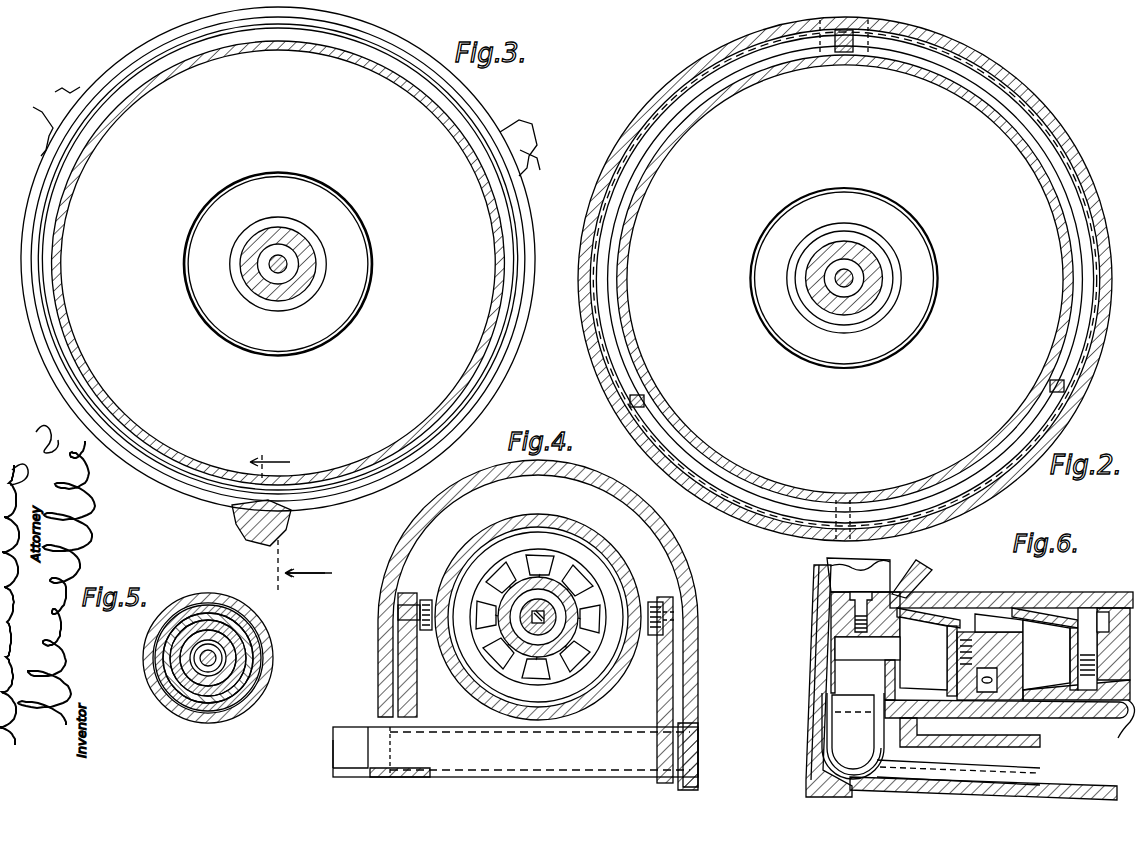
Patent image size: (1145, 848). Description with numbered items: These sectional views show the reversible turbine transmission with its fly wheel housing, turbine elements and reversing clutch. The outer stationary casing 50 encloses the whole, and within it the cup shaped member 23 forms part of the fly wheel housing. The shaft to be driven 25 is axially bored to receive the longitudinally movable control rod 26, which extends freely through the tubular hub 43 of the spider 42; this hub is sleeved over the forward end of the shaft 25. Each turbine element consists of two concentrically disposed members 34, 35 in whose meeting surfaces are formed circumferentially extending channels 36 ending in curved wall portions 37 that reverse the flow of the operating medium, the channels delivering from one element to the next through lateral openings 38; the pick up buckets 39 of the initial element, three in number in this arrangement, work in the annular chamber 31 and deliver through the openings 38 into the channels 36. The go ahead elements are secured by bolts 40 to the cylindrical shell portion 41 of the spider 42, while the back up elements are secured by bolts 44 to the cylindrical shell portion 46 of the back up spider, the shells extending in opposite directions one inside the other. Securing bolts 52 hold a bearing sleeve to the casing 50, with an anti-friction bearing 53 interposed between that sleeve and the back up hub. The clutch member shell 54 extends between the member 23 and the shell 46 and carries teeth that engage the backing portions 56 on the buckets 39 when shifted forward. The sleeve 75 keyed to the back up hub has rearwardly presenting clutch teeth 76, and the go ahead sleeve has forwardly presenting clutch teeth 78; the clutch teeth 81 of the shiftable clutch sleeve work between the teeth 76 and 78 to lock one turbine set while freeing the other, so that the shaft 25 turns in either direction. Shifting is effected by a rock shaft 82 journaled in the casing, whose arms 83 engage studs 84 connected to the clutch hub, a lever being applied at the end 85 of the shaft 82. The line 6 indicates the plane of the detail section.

In FIG. 3, the section line 6- 6 is at (291, 512).
In FIG. 5, the section line 6- 6 is at (303, 584).
In FIG. 6, the cup shaped member 23 is at (1084, 786).
In FIG. 4, the shaft to be driven 25 is at (548, 617).
In FIG. 5, the shaft to be driven 25 is at (196, 660).
In FIG. 3, the control rod 26 is at (292, 262).
In FIG. 2, the control rod 26 is at (843, 292).
In FIG. 4, the control rod 26 is at (552, 610).
In FIG. 5, the control rod 26 is at (185, 648).
In FIG. 6, the annular chamber 31 is at (1122, 730).
In FIG. 6, the turbine element member 34 is at (935, 652).
In FIG. 6, the turbine element member 35 is at (935, 596).
In FIG. 6, the channels 36 is at (970, 612).
In FIG. 2, the curved wall portions 37 is at (836, 55).
In FIG. 3, the lateral openings 38 is at (52, 348).
In FIG. 6, the lateral openings 38 is at (923, 653).
In FIG. 3, the pick up buckets 39 is at (40, 108).
In FIG. 6, the pick up buckets 39 is at (853, 736).
In FIG. 4, the bolts 40 is at (600, 592).
In FIG. 6, the bolts 40 is at (1103, 568).
In FIG. 6, the cylindrical shell portion 41 is at (1103, 608).
In FIG. 2, the spider 42 is at (920, 568).
In FIG. 3, the tubular hub 43 is at (312, 282).
In FIG. 2, the tubular hub 43 is at (882, 279).
In FIG. 5, the tubular hub 43 is at (178, 692).
In FIG. 6, the bolts 44 is at (985, 657).
In FIG. 3, the cylindrical shell portion 46 is at (130, 428).
In FIG. 6, the cylindrical shell portion 46 is at (1080, 718).
In FIG. 2, the outer stationary casing 50 is at (845, 290).
In FIG. 2, the securing bolts 52 is at (845, 279).
In FIG. 4, the anti-friction bearing 53 is at (618, 690).
In FIG. 6, the clutch member shell 54 is at (1032, 745).
In FIG. 3, the backing portions 56 is at (545, 178).
In FIG. 5, the sleeve 75 is at (254, 632).
In FIG. 5, the clutch teeth 76 is at (216, 600).
In FIG. 4, the clutch teeth 78 is at (483, 648).
In FIG. 4, the clutch teeth 81 is at (522, 560).
In FIG. 4, the rock shaft 82 is at (430, 750).
In FIG. 4, the arms 83 is at (417, 685).
In FIG. 4, the studs 84 is at (410, 603).
In FIG. 4, the end of rock shaft 85 is at (332, 748).